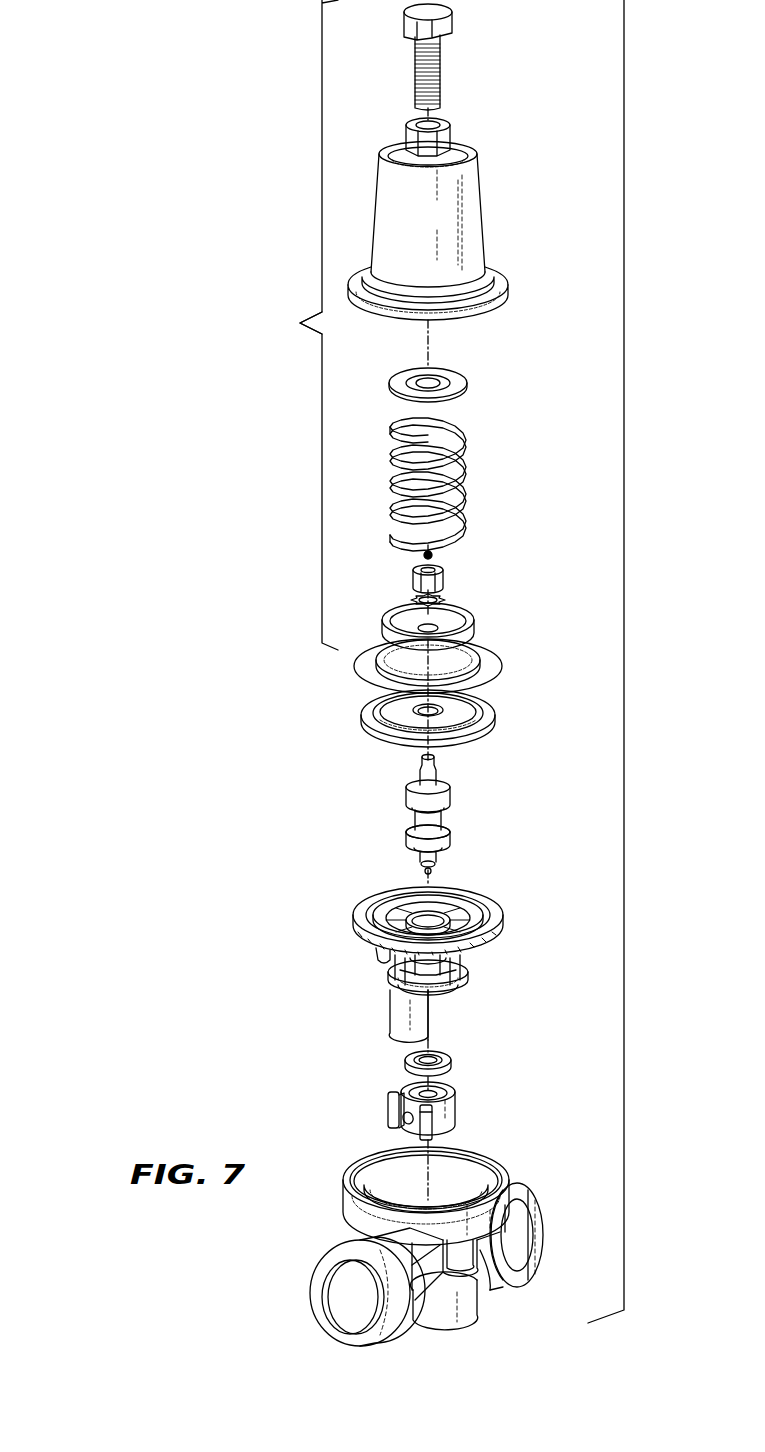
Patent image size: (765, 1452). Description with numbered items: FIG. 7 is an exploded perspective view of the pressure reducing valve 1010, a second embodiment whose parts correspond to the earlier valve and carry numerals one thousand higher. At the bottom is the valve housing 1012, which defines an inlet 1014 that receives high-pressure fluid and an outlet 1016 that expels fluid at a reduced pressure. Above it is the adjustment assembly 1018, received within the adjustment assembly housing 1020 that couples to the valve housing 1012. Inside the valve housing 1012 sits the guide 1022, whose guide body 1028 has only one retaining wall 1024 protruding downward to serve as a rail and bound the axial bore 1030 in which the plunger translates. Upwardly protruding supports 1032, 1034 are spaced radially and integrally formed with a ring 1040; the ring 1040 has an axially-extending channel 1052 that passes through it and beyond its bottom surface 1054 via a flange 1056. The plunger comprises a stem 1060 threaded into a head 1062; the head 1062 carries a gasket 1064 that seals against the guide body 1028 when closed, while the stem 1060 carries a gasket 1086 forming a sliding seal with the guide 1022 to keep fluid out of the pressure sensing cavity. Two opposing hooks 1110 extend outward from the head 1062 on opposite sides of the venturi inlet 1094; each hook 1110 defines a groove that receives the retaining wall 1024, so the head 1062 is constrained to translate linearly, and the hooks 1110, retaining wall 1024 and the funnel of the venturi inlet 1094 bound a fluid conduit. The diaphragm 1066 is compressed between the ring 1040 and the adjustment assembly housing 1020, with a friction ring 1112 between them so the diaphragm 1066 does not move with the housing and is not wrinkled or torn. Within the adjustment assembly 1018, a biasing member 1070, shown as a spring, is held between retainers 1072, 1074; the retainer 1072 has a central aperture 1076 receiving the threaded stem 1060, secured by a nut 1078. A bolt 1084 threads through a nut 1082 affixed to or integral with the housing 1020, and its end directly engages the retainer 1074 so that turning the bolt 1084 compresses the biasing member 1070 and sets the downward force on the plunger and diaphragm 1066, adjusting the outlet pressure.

The pressure reducing valve 1010 is at (190, 172).
The valve housing 1012 is at (513, 1288).
The inlet 1014 is at (306, 1305).
The outlet 1016 is at (540, 1213).
The adjustment assembly 1018 is at (300, 323).
The adjustment assembly housing 1020 is at (470, 217).
The guide 1022 is at (333, 902).
The retaining wall 1024 is at (395, 1005).
The guide body 1028 is at (455, 962).
The axial bore 1030 is at (440, 1003).
The support 1032 is at (390, 972).
The support 1034 is at (465, 968).
The ring 1040 is at (385, 900).
The axially-extending channel 1052 is at (440, 920).
The bottom surface 1054 is at (415, 970).
The flange 1056 is at (455, 990).
The stem 1060 is at (425, 822).
The head 1062 is at (448, 1112).
The gasket 1064 is at (405, 1058).
The diaphragm 1066 is at (488, 720).
The biasing member 1070 is at (455, 477).
The retainer 1072 is at (477, 616).
The retainer 1074 is at (455, 380).
The central aperture 1076 is at (438, 625).
The nut 1078 is at (445, 577).
The nut 1082 is at (455, 148).
The bolt 1084 is at (440, 70).
The gasket 1086 is at (408, 833).
The venturi inlet 1094 is at (404, 1127).
The hooks 1110 is at (388, 1110).
The friction ring 1112 is at (487, 668).